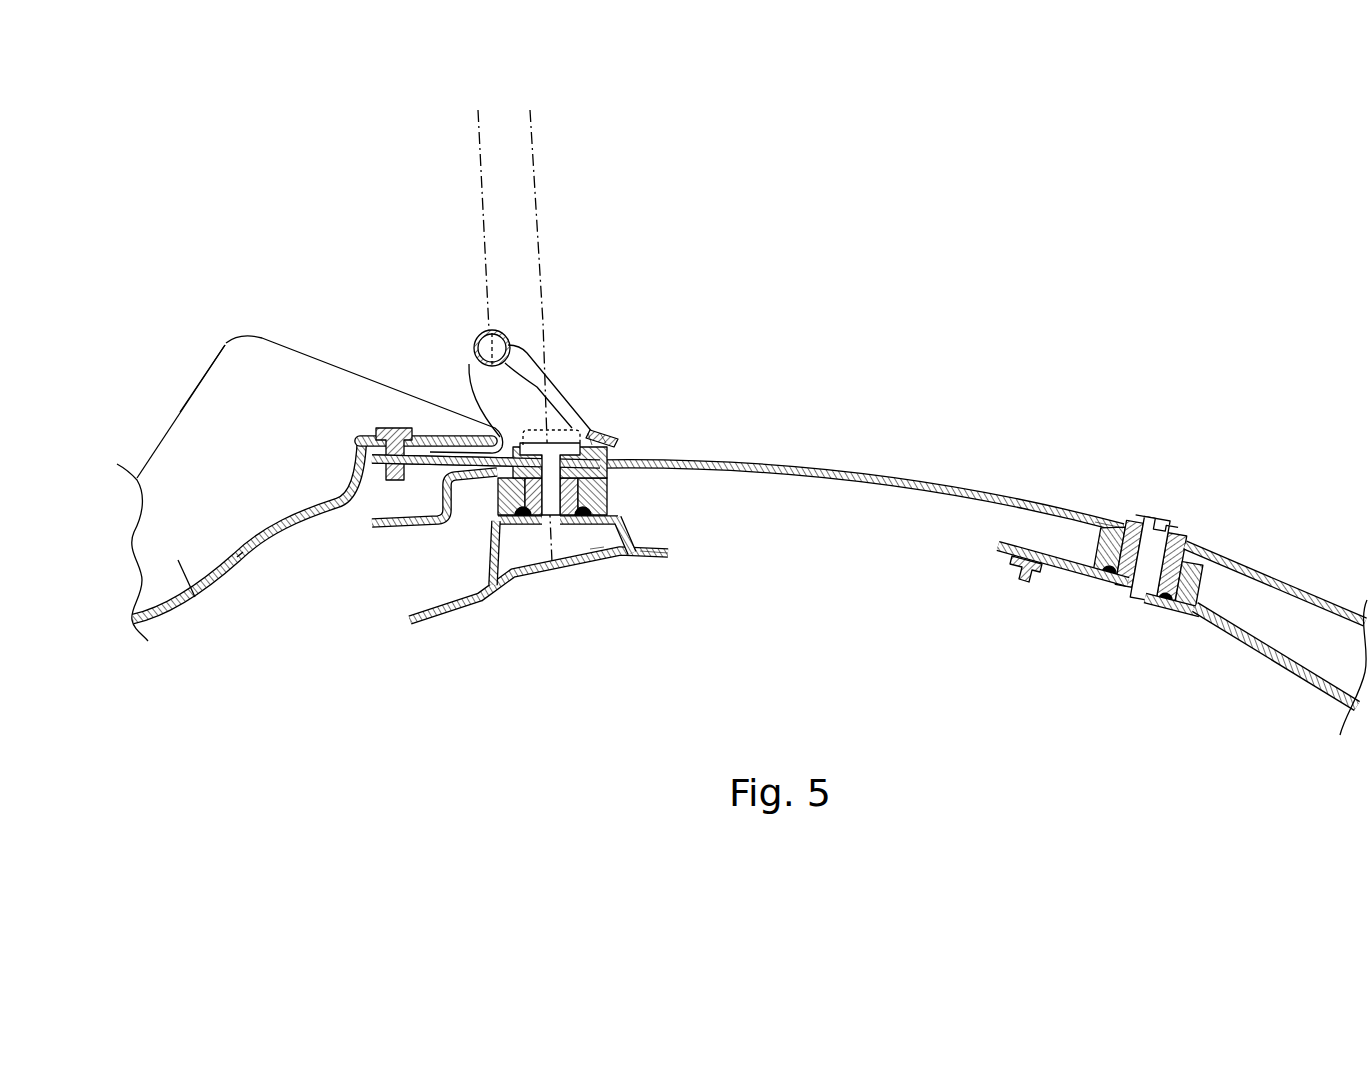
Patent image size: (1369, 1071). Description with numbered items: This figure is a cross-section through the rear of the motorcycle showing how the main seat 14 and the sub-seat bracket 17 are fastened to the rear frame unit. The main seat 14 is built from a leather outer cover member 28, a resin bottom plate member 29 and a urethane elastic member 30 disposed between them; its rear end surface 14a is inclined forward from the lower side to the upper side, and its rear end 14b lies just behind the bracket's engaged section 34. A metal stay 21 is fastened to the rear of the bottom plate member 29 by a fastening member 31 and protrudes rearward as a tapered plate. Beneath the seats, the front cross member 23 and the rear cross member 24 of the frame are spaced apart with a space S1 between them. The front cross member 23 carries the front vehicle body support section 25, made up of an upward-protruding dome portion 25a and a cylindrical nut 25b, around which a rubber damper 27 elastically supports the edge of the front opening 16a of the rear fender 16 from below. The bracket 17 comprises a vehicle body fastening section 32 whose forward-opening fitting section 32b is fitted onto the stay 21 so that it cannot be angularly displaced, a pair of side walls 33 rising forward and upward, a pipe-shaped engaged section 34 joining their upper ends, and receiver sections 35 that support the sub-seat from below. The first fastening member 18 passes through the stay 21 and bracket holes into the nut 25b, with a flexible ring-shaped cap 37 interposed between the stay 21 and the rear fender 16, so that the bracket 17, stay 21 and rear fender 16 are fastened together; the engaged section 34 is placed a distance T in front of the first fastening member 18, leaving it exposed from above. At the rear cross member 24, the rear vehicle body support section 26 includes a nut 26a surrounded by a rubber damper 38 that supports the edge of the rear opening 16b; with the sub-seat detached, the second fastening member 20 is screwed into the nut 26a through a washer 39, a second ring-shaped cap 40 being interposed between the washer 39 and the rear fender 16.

The main seat 14 is at (226, 341).
The rear end surface 14a is at (315, 352).
The rear end 14b is at (465, 400).
The rear fender 16 is at (865, 472).
The front opening 16a is at (483, 478).
The rear opening 16b is at (1120, 526).
The bracket 17 is at (527, 346).
The first fastening member 18 is at (560, 545).
The second fastening member 20 is at (1170, 527).
The stay 21 is at (390, 478).
The front cross member 23 is at (478, 600).
The rear cross member 24 is at (1217, 643).
The front vehicle body support section 25 is at (480, 557).
The dome portion 25a is at (648, 562).
The nut 25b is at (597, 548).
The rear vehicle body support section 26 is at (1106, 594).
The nut 26a is at (1153, 603).
The rubber damper 27 is at (607, 498).
The outer cover member 28 is at (190, 405).
The bottom plate member 29 is at (247, 552).
The elastic member 30 is at (197, 600).
The fastening member 31 is at (385, 428).
The vehicle body fastening section 32 is at (622, 440).
The fitting section 32b is at (590, 425).
The side walls 33 is at (543, 388).
The engaged section 34 is at (480, 331).
The receiver sections 35 is at (612, 435).
The cap 37 is at (610, 470).
The rubber damper 38 is at (1200, 589).
The washer 39 is at (1194, 545).
The cap 40 is at (1200, 554).
The space S1 is at (870, 535).
The distance T is at (528, 130).